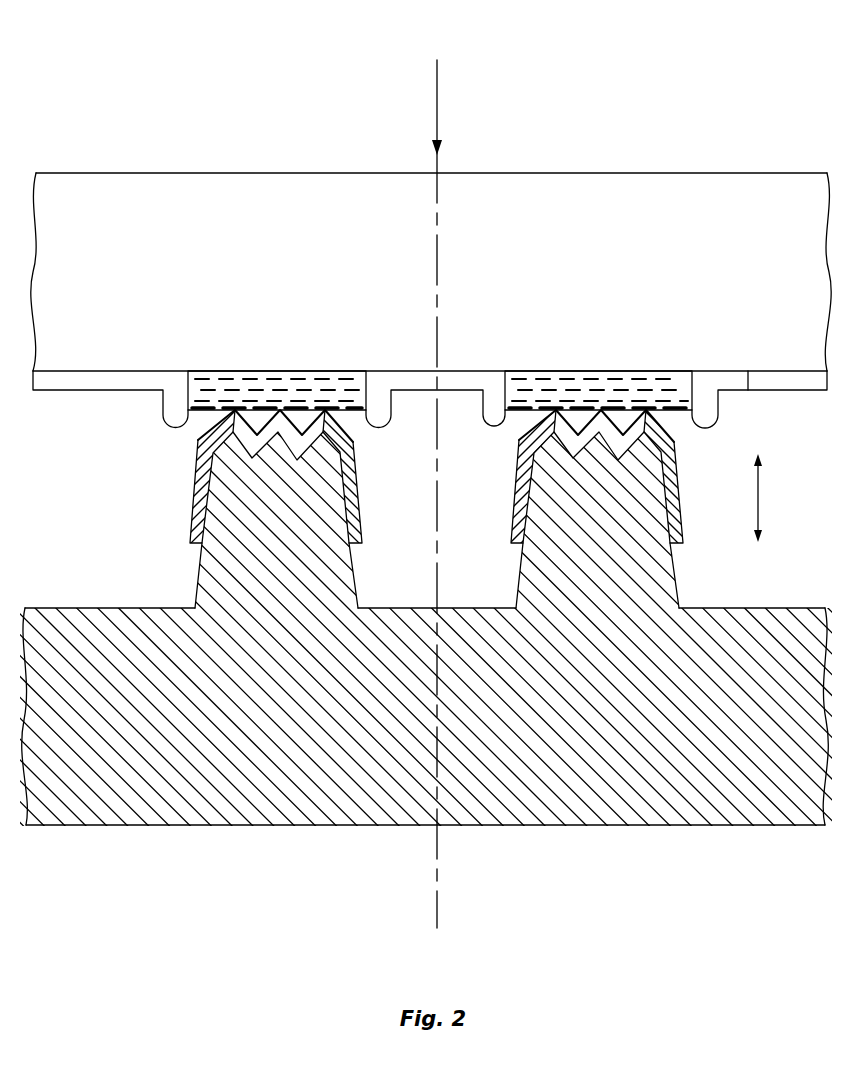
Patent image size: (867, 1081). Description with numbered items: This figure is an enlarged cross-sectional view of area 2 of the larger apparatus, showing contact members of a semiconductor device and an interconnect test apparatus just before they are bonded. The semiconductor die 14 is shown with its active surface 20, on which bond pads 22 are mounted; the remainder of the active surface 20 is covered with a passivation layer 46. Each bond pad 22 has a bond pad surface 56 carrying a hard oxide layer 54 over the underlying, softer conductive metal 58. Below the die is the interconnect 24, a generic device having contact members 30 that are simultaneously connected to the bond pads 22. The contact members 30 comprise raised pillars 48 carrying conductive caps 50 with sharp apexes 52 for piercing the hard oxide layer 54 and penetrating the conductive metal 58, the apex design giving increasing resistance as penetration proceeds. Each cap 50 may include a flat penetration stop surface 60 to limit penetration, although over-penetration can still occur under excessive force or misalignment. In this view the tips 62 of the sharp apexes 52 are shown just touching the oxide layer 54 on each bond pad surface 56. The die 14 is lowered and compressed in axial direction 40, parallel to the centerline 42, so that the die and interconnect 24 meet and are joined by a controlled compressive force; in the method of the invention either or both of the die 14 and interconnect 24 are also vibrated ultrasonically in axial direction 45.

The area 2 is at (710, 86).
The die 14 is at (431, 272).
The active surface 20 is at (749, 390).
The bond pads 22 is at (408, 374).
The interconnect 24 is at (433, 616).
The contact members 30 is at (146, 499).
The axial direction 40 is at (437, 99).
The centerline 42 is at (437, 273).
The axial direction 45 is at (760, 478).
The passivation layer 46 is at (105, 381).
The raised pillars 48 is at (330, 497).
The conductive caps 50 is at (201, 510).
The sharp apexes 52 is at (357, 462).
The hard oxide layer 54 is at (213, 414).
The bond pad surface 56 is at (249, 409).
The conductive metal 58 is at (300, 377).
The flat penetration stop surface 60 is at (553, 409).
The tips 62 is at (323, 421).